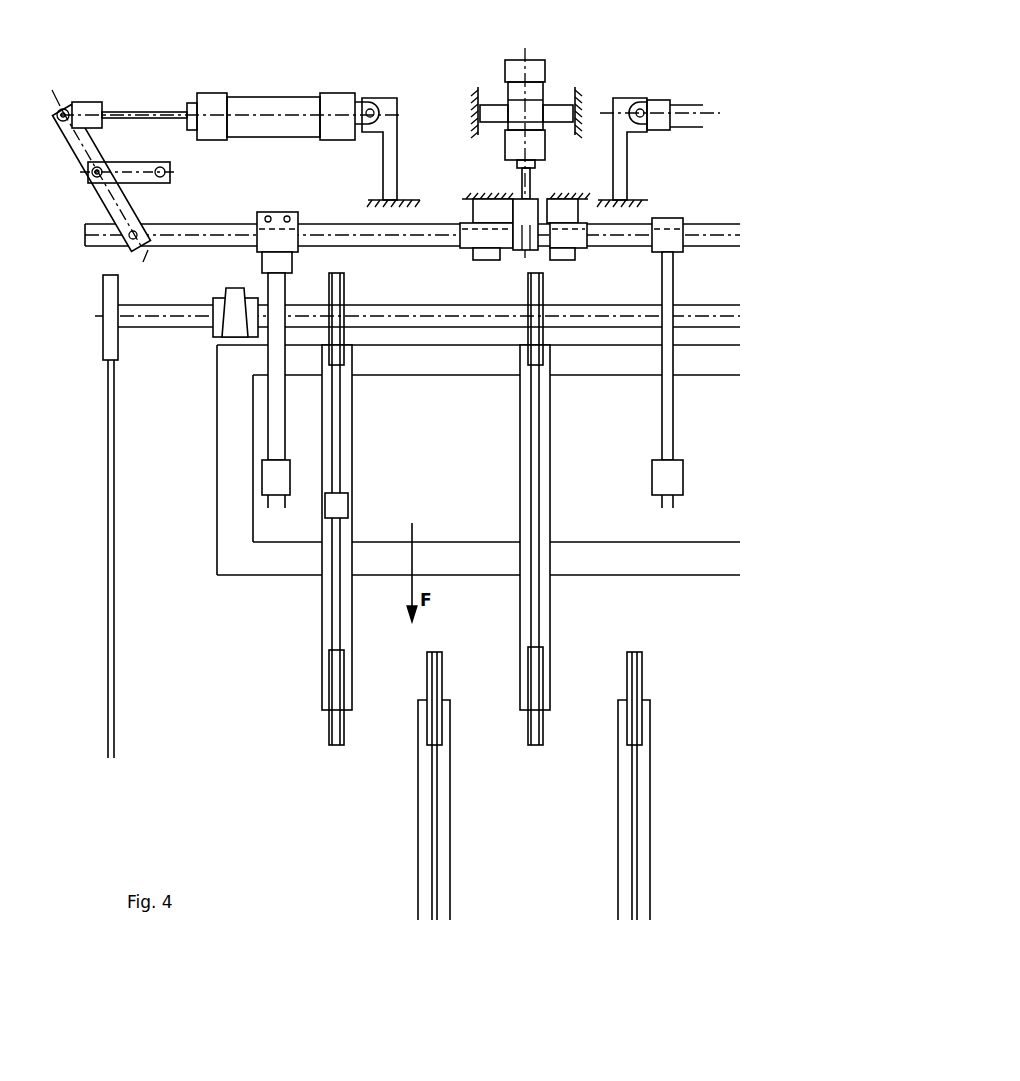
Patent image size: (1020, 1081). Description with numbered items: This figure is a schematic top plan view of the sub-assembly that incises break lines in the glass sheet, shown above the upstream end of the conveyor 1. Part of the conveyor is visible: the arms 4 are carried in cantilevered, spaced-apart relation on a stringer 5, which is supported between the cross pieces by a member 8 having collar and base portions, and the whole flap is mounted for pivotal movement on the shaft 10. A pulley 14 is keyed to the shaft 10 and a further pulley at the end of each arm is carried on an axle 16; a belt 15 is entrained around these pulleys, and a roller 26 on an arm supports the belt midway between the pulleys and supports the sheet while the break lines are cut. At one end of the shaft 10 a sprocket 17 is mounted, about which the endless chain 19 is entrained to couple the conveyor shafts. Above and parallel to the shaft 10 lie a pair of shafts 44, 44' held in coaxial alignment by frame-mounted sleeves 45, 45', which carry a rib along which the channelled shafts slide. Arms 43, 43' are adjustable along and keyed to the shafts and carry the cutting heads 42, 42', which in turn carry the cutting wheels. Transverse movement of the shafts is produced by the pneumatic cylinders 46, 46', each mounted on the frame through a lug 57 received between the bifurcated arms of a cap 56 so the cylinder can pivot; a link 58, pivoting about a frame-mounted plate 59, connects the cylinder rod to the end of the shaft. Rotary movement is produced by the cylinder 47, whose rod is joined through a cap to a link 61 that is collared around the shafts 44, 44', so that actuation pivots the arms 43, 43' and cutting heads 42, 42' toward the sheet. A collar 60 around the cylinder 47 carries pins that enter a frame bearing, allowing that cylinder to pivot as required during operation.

The conveyor 1 is at (195, 648).
The arms 4 is at (520, 445).
The stringers 5 is at (470, 557).
The support member 8 is at (218, 325).
The shaft 10 is at (413, 318).
The pulley 14 is at (525, 332).
The belt 15 is at (335, 633).
The axle 16 is at (543, 713).
The sprocket 17 is at (112, 338).
The endless chain 19 is at (108, 573).
The rollers 26 is at (347, 505).
The cutting head 42 is at (288, 498).
The cutting head 42' is at (627, 446).
The arm 43 is at (290, 366).
The arm 43' is at (643, 356).
The shaft 44 is at (412, 220).
The shaft 44' is at (661, 210).
The sleeve 45 is at (470, 214).
The sleeve 45' is at (577, 214).
The moving means 46 is at (230, 77).
The moving means 46' is at (658, 111).
The moving means 47 is at (523, 87).
The cap 56 is at (368, 100).
The lug 57 is at (386, 98).
The link 58 is at (105, 195).
The plate 59 is at (141, 168).
The collar 60 is at (540, 107).
The link 61 is at (517, 210).